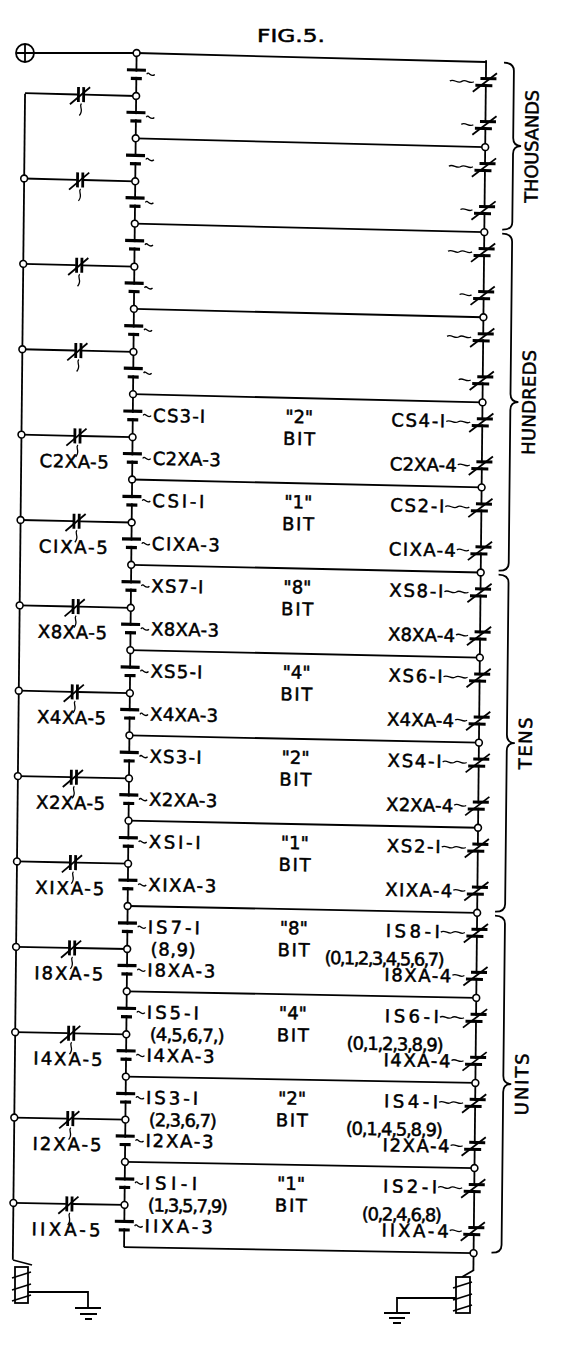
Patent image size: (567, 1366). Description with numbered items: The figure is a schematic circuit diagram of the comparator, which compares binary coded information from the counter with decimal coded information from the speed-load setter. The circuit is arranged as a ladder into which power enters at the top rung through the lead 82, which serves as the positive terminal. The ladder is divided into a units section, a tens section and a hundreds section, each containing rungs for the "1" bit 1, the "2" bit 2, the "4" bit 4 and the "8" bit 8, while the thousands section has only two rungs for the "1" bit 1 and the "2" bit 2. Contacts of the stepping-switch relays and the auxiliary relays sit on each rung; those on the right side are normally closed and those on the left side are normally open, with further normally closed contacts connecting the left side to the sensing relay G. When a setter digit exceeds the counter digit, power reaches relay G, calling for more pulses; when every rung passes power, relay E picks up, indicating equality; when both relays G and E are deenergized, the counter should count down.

The lead 82 is at (84, 53).
The sensing relay G is at (37, 1269).
The sensing relay E is at (449, 1279).
The "2" bit rung 2 is at (261, 94).
The "1" bit rung 1 is at (258, 179).
The "8" bit rung 8 is at (257, 264).
The "4" bit rung 4 is at (257, 350).